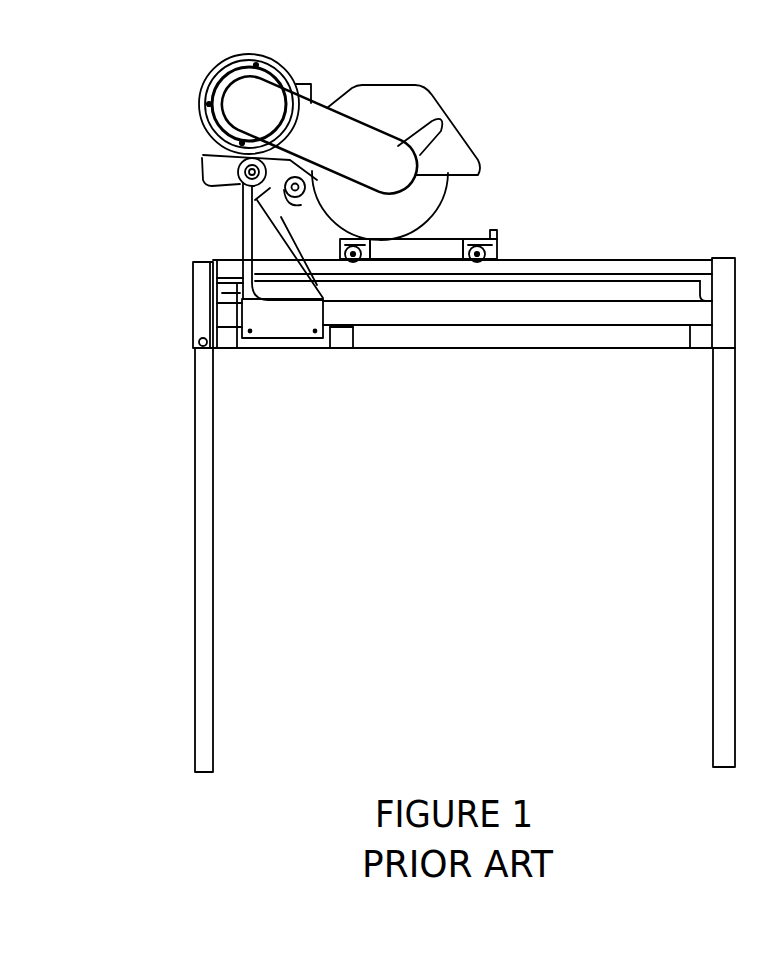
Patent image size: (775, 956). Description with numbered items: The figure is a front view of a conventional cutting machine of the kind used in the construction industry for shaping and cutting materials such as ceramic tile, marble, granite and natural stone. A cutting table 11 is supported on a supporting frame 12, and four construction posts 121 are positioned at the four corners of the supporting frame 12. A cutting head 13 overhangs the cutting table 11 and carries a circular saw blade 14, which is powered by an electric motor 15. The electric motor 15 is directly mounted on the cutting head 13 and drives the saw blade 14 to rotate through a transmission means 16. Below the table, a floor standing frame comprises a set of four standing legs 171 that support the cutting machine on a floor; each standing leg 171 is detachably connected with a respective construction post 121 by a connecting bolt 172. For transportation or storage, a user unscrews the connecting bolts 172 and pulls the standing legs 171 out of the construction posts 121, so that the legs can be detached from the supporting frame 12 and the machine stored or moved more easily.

The cutting table 11 is at (433, 243).
The supporting frame 12 is at (482, 313).
The construction post 121 is at (203, 292).
The cutting head 13 is at (257, 199).
The circular saw blade 14 is at (418, 200).
The electric motor 15 is at (213, 75).
The transmission means 16 is at (338, 133).
The standing leg 171 is at (205, 535).
The connecting bolt 172 is at (198, 342).